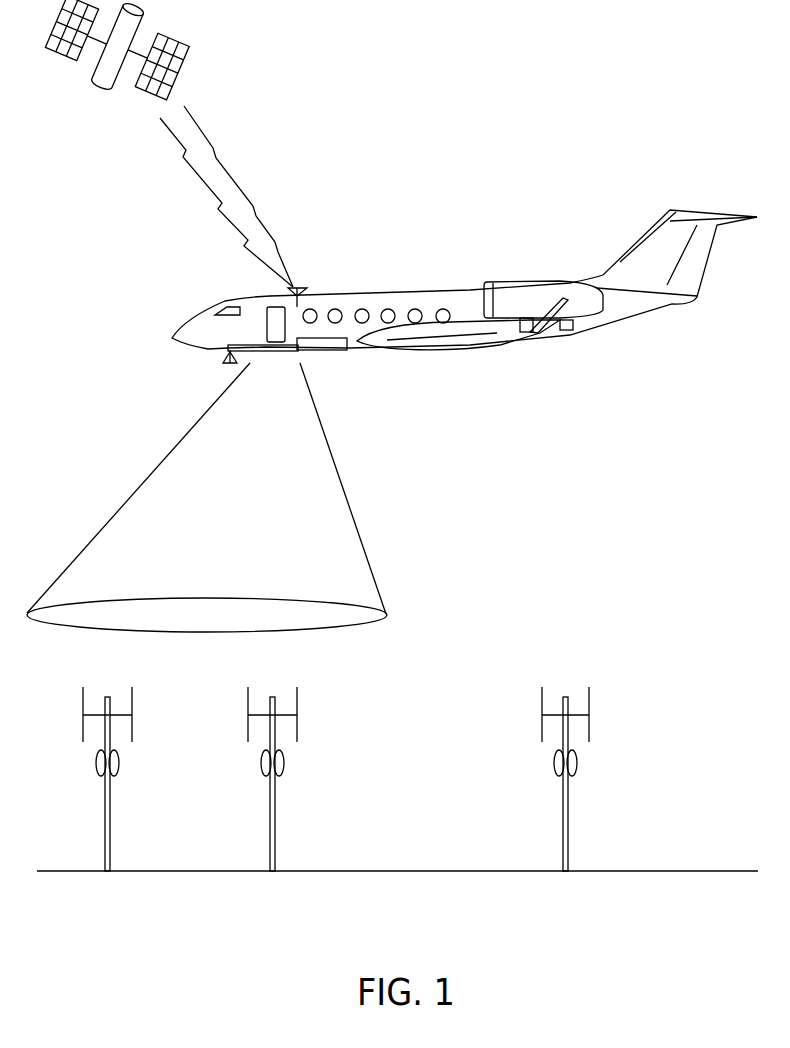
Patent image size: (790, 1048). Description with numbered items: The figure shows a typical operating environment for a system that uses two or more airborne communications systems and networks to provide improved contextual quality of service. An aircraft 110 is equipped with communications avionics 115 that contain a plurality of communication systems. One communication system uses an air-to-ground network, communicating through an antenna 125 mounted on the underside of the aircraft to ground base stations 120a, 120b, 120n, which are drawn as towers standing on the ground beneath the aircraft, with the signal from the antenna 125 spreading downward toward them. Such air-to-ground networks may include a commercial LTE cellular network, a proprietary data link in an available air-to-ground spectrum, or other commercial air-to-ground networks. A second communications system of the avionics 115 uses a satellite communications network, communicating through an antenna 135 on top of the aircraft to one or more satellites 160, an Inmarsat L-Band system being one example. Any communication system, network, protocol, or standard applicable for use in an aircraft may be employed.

The aircraft 110 is at (432, 292).
The communications avionics 115 is at (313, 350).
The ground base station 120a is at (132, 698).
The ground base station 120b is at (298, 695).
The ground base station 120n is at (592, 692).
The antenna 125 is at (223, 357).
The antenna 135 is at (307, 290).
The satellite 160 is at (103, 85).